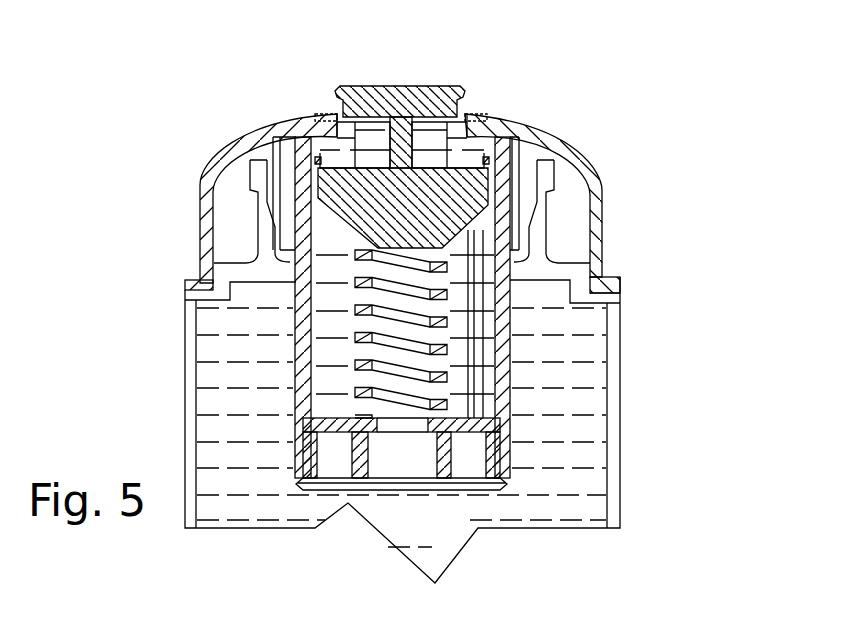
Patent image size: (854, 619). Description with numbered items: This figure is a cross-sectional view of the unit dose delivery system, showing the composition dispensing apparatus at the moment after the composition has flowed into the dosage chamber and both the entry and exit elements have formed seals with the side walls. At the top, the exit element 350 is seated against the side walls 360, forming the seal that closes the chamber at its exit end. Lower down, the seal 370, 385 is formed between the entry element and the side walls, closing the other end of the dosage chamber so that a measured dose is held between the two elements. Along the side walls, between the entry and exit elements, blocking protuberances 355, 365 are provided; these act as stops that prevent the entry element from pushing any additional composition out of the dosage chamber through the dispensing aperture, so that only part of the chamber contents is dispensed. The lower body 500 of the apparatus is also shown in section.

The exit element 350 is at (466, 116).
The protuberance 355 is at (488, 176).
The side walls 360 is at (322, 115).
The protuberance 365 is at (303, 177).
The seal of the entry element and side walls 370 is at (503, 180).
The seal of the entry element and side walls 385 is at (317, 187).
The container body 500 is at (562, 417).